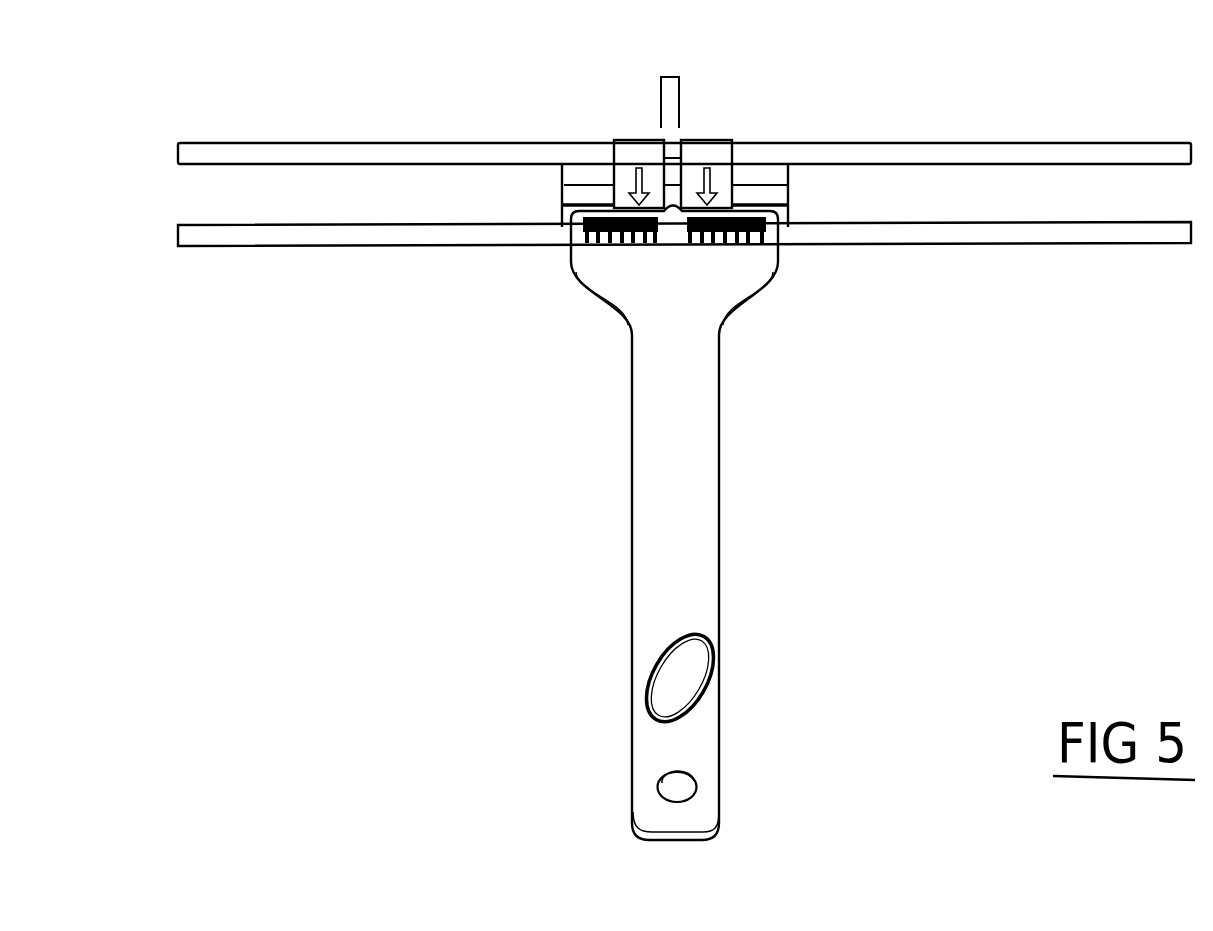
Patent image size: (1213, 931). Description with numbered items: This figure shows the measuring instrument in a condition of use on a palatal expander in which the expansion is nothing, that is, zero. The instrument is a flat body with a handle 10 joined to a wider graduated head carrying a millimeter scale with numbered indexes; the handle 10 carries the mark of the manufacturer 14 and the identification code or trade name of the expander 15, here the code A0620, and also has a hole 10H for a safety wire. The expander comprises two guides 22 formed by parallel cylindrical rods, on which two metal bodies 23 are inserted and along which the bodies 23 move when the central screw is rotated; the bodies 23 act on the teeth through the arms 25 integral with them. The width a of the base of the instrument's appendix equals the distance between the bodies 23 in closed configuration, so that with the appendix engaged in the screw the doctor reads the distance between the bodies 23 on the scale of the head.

The handle 10 is at (717, 612).
The hole 10H is at (670, 788).
The mark of the manufacturer 14 is at (710, 706).
The identification code or trade name of the expander 15 is at (658, 558).
The guides 22 is at (562, 180).
The bodies 23 is at (627, 140).
The arms 25 is at (360, 142).
The width of the base a is at (674, 74).